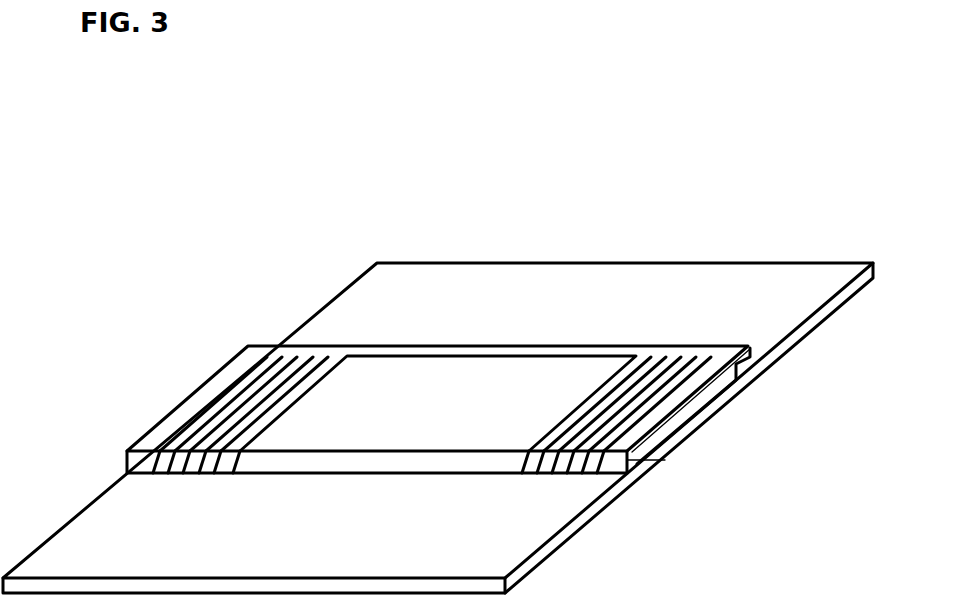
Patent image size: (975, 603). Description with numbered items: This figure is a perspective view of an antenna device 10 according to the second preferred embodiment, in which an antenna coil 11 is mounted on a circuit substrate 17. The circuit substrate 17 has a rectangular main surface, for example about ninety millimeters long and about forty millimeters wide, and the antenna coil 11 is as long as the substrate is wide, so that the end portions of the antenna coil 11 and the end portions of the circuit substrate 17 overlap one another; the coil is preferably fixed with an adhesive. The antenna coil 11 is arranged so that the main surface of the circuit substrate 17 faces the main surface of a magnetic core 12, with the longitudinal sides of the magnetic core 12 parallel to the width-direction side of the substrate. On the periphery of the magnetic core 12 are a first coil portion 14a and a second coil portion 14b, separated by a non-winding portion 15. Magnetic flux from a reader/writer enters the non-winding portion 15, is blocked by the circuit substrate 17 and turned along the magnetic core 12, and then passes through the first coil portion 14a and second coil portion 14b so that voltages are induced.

The antenna device 10 is at (108, 73).
The antenna coil 11 is at (316, 343).
The magnetic core 12 is at (708, 388).
The first coil portion 14a is at (228, 485).
The second coil portion 14b is at (607, 482).
The non-winding portion 15 is at (447, 418).
The circuit substrate 17 is at (725, 292).